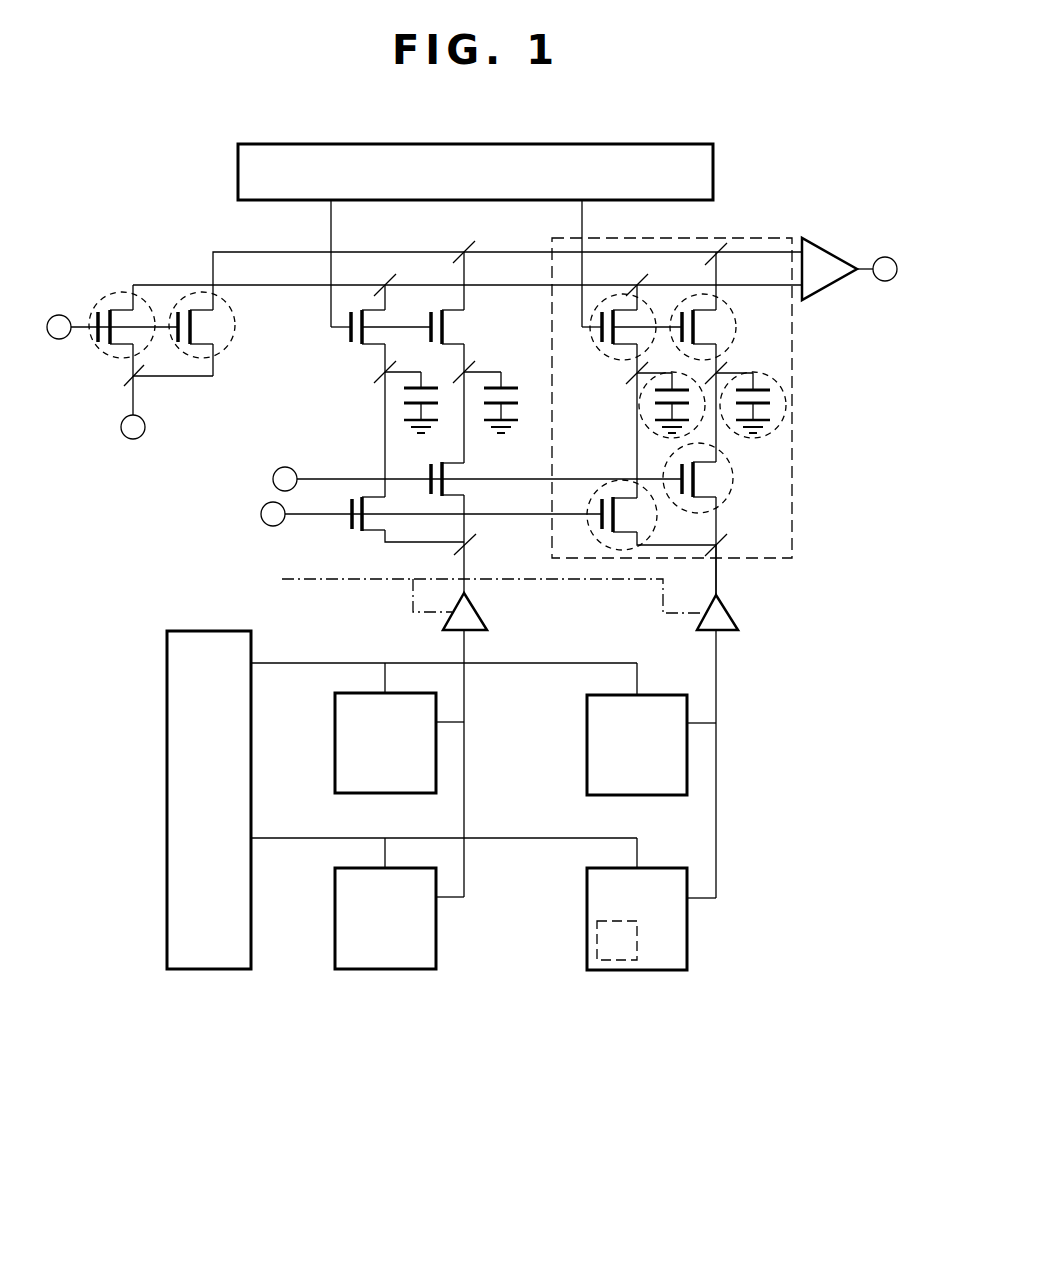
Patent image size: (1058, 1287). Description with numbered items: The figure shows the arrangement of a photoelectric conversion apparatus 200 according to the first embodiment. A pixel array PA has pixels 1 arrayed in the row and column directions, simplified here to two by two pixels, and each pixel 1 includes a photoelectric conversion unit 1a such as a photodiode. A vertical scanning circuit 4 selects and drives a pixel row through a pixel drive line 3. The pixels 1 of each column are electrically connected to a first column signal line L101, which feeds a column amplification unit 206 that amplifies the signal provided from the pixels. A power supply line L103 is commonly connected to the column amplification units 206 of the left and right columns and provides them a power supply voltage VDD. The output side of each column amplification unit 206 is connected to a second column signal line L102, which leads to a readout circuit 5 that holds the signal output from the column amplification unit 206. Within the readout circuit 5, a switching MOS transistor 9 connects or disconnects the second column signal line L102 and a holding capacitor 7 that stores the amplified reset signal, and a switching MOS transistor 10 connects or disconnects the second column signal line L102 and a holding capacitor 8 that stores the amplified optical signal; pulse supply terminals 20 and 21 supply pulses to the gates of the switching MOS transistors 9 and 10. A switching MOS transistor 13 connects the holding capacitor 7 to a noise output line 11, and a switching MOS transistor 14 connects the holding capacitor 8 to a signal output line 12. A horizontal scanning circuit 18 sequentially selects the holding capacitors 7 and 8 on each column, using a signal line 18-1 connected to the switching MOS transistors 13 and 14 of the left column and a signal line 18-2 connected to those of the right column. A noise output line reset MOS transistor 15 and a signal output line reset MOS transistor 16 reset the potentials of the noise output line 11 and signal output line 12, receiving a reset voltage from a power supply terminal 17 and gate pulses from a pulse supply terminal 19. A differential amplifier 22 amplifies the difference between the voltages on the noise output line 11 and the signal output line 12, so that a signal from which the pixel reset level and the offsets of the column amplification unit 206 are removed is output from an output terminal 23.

The pixel 1 is at (688, 945).
The photoelectric conversion unit 1a is at (617, 962).
The pixel drive line 3 is at (640, 836).
The vertical scanning circuit 4 is at (167, 665).
The readout circuit 5 is at (793, 497).
The holding capacitor 7 is at (642, 438).
The holding capacitor 8 is at (764, 440).
The switching MOS transistor 9 is at (590, 527).
The switching MOS transistor 10 is at (730, 505).
The noise output line 11 is at (289, 287).
The signal output line 12 is at (225, 250).
The switching MOS transistor 13 is at (616, 362).
The switching MOS transistor 14 is at (735, 342).
The noise output line reset MOS transistor 15 is at (235, 340).
The signal output line reset MOS transistor 16 is at (112, 360).
The power supply terminal 17 is at (127, 440).
The horizontal scanning circuit 18 is at (713, 172).
The signal line 18-1 is at (331, 227).
The signal line 18-2 is at (582, 218).
The pulse supply terminal 19 is at (60, 310).
The pulse supply terminal 20 is at (261, 511).
The pulse supply terminal 21 is at (271, 477).
The differential amplifier 22 is at (827, 246).
The output terminal 23 is at (887, 256).
The photoelectric conversion apparatus 200 is at (366, 1078).
The column amplification unit 206 is at (740, 615).
The first column signal line L101 is at (735, 680).
The second column signal line L102 is at (735, 575).
The power supply line L103 is at (342, 596).
The pixel array PA is at (696, 1006).
The power supply voltage VDD is at (464, 590).